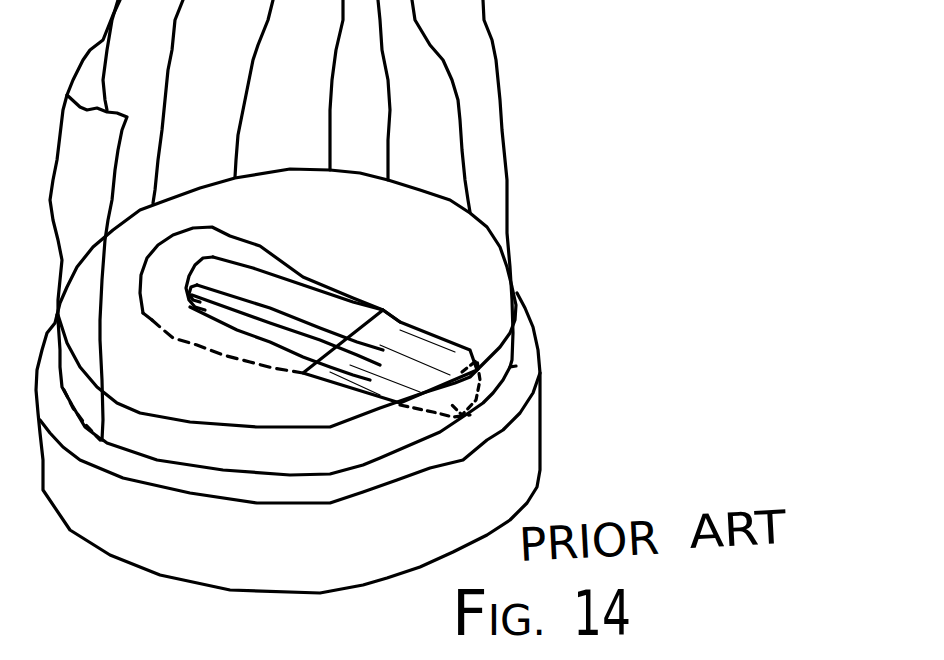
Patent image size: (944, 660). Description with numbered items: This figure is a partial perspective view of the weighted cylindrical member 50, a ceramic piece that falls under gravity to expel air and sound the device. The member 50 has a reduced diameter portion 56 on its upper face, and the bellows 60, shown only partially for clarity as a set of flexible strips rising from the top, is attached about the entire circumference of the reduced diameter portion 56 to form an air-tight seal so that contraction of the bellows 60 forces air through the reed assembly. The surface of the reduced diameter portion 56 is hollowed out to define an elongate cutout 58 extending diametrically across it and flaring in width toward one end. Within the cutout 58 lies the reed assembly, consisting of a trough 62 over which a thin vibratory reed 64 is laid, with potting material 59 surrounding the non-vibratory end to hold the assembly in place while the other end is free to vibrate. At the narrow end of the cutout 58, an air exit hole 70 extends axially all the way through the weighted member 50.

The weighted cylindrical member 50 is at (507, 502).
The reduced diameter portion 56 is at (290, 410).
The elongate cutout 58 is at (226, 240).
The potting material 59 is at (478, 322).
The bellows 60 is at (480, 83).
The trough 62 is at (191, 311).
The vibratory reed 64 is at (283, 295).
The air exit hole 70 is at (551, 391).